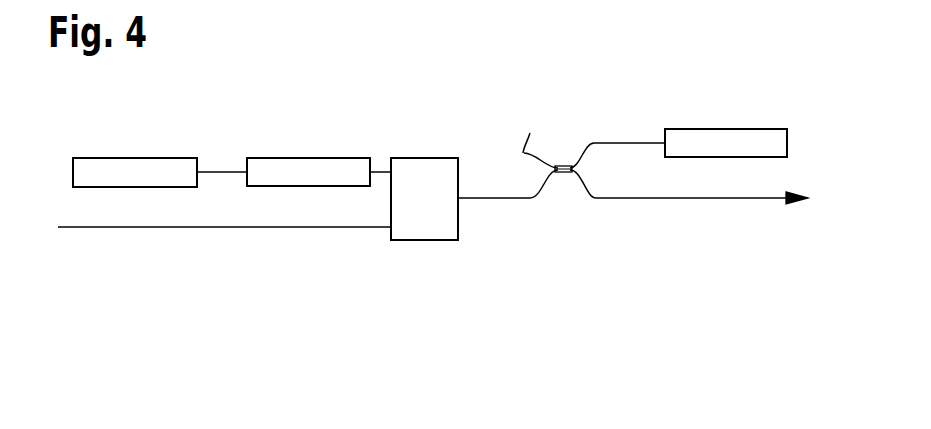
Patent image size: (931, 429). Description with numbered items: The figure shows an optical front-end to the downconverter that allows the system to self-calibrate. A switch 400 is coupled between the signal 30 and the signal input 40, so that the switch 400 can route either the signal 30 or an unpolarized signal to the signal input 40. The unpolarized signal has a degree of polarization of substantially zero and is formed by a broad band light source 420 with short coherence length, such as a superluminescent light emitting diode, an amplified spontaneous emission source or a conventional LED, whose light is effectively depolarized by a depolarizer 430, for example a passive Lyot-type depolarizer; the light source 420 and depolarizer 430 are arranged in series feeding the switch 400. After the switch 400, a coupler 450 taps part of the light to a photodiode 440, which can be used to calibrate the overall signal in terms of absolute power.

The signal 30 is at (225, 228).
The signal input 40 is at (705, 200).
The switch 400 is at (425, 165).
The broad band light source 420 is at (135, 165).
The depolarizer 430 is at (308, 165).
The photodiode 440 is at (727, 137).
The coupler 450 is at (576, 124).